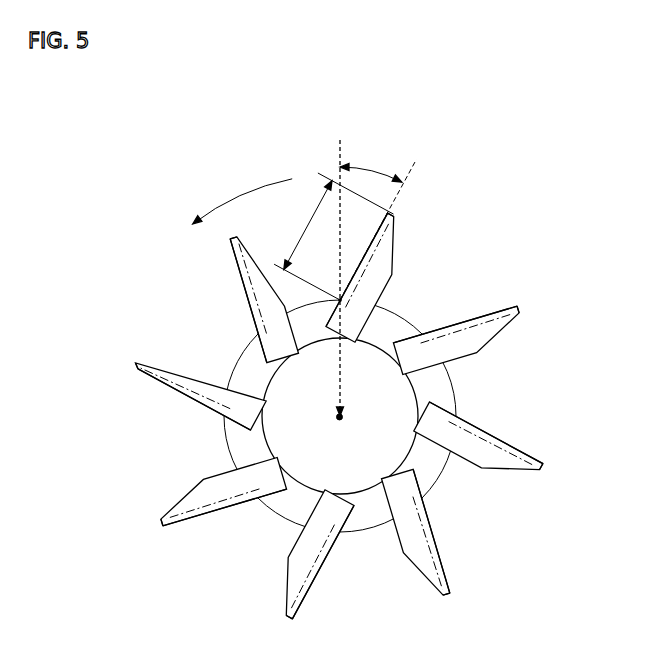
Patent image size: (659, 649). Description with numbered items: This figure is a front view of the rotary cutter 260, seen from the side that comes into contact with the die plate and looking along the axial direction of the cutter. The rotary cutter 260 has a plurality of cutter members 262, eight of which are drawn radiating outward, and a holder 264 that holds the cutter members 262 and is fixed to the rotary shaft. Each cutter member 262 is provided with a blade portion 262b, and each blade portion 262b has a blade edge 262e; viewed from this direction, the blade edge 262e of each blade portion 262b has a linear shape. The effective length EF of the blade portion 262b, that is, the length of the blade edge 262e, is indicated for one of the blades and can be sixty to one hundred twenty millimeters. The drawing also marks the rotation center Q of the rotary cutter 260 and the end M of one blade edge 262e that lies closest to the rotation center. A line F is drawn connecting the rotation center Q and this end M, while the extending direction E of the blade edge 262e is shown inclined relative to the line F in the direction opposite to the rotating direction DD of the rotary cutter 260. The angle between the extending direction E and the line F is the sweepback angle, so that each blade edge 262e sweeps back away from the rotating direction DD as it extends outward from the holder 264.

The rotary cutter 260 is at (333, 377).
The cutter member 262 is at (199, 379).
The blade portion 262b is at (226, 236).
The blade edge 262e is at (245, 299).
The holder 264 is at (455, 397).
The line connecting rotation center and blade edge end F is at (339, 141).
The extending direction of blade edge E is at (418, 159).
The effective length of blade portion EF is at (333, 236).
The rotating direction of rotary cutter DD is at (247, 193).
The end of blade edge close to rotation center M is at (340, 300).
The rotation center of rotary cutter Q is at (345, 419).